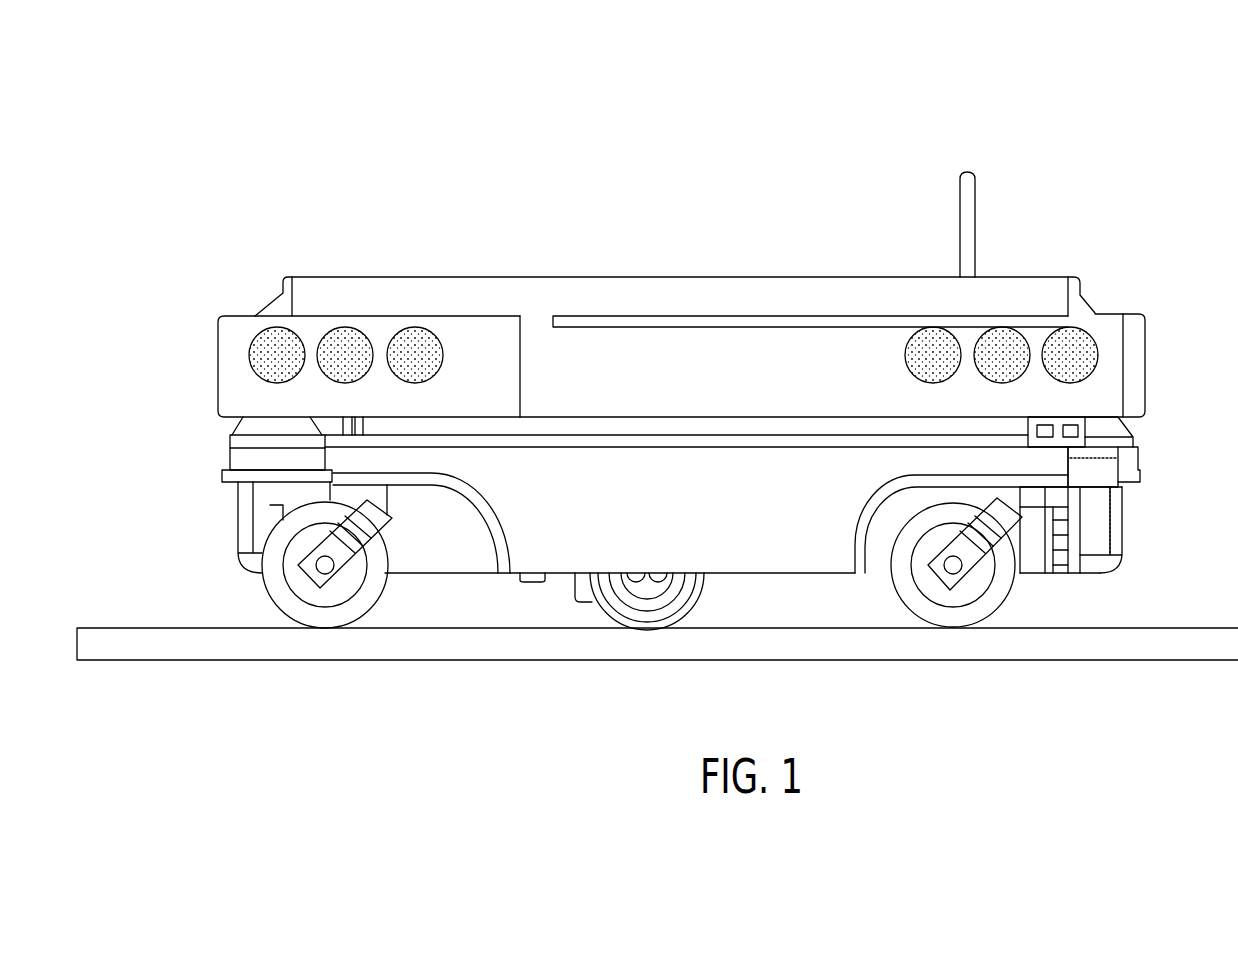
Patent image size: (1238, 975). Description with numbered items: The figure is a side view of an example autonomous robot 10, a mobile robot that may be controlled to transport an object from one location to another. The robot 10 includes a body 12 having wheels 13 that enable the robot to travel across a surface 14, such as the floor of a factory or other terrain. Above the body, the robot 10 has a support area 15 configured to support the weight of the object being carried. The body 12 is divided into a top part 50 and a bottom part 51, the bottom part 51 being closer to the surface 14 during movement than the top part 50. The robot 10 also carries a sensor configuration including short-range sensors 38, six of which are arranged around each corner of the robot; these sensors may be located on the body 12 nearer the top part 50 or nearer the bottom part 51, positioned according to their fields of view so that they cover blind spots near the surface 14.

The autonomous robot 10 is at (185, 114).
The body 12 is at (703, 367).
The wheels 13 is at (272, 603).
The surface 14 is at (238, 656).
The support area 15 is at (515, 277).
The short-range sensors 38 is at (253, 342).
The top part 50 is at (184, 330).
The bottom part 51 is at (196, 500).